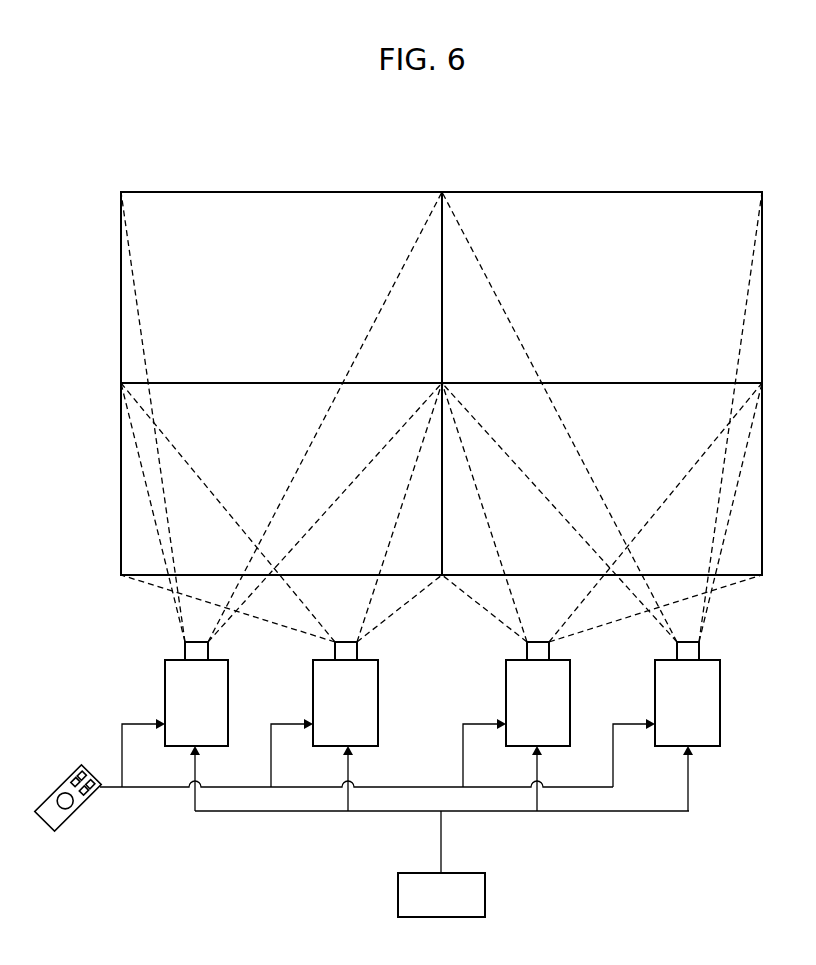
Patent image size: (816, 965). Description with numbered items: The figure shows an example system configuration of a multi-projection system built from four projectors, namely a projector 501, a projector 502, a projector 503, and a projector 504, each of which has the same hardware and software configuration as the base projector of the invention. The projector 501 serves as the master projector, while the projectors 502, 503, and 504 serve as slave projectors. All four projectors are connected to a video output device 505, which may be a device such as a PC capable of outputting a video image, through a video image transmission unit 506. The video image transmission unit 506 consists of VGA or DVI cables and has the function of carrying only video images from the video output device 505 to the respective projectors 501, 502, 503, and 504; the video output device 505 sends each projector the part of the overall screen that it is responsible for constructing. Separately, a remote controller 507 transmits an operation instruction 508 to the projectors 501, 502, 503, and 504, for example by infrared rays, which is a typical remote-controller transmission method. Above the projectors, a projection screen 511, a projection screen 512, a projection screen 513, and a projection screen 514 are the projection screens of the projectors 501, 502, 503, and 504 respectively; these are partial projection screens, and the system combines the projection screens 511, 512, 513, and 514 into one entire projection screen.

The projector 501 is at (165, 690).
The projector 502 is at (313, 690).
The projector 503 is at (506, 690).
The projector 504 is at (655, 690).
The video output device 505 is at (485, 893).
The video image transmission unit 506 is at (668, 814).
The remote controller 507 is at (68, 828).
The operation instruction 508 is at (153, 790).
The projection screen 511 is at (233, 195).
The projection screen 512 is at (232, 385).
The projection screen 513 is at (627, 385).
The projection screen 514 is at (582, 195).